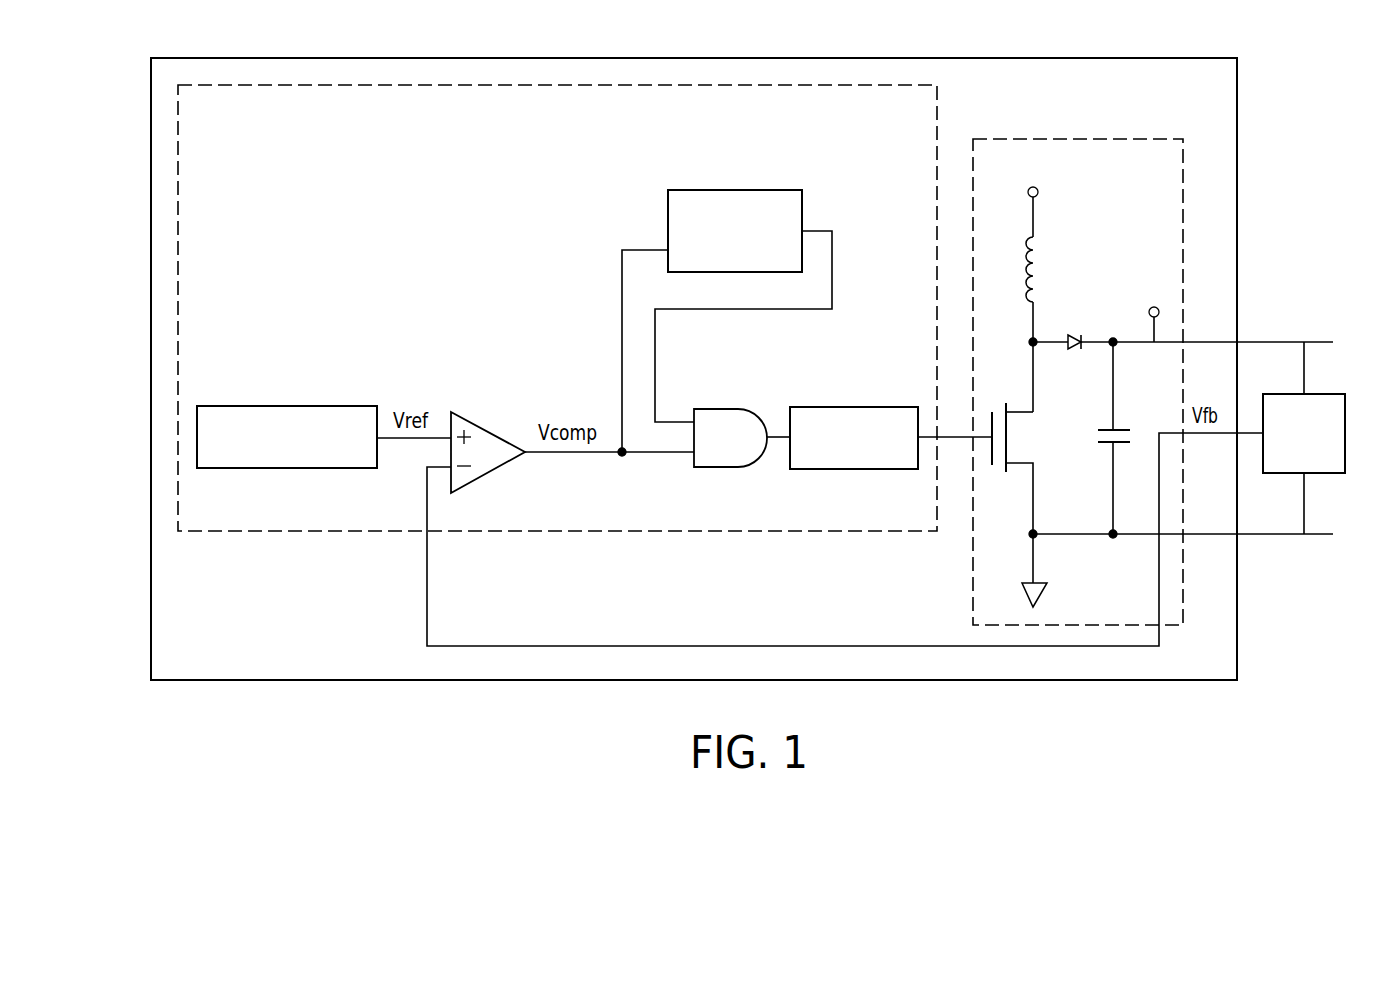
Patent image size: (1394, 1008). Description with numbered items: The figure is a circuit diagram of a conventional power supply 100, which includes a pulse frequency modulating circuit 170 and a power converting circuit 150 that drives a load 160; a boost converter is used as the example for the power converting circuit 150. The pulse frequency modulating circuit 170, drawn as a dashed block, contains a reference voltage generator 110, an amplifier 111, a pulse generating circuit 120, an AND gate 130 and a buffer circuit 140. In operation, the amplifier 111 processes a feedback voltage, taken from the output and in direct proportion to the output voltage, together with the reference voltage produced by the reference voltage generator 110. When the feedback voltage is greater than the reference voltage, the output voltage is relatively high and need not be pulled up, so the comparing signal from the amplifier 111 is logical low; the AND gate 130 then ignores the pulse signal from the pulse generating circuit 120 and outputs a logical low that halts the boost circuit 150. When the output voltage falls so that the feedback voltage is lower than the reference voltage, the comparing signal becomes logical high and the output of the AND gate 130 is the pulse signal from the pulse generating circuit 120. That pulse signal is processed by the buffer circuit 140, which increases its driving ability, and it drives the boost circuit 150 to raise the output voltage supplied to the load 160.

The power supply 100 is at (1352, 713).
The reference voltage generator 110 is at (287, 405).
The amplifier 111 is at (490, 425).
The pulse generating circuit 120 is at (733, 190).
The AND gate 130 is at (717, 409).
The buffer circuit 140 is at (855, 407).
The power converting circuit 150 is at (1183, 197).
The load 160 is at (1345, 430).
The pulse frequency modulating circuit 170 is at (797, 531).